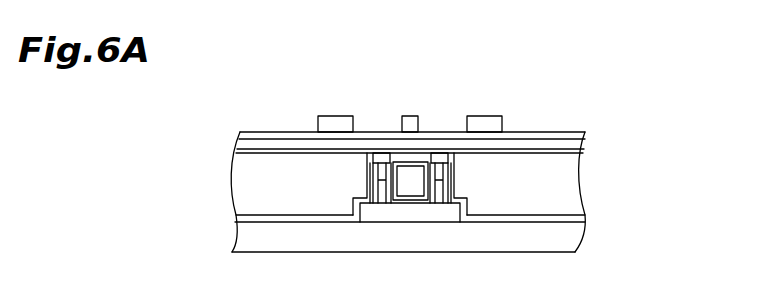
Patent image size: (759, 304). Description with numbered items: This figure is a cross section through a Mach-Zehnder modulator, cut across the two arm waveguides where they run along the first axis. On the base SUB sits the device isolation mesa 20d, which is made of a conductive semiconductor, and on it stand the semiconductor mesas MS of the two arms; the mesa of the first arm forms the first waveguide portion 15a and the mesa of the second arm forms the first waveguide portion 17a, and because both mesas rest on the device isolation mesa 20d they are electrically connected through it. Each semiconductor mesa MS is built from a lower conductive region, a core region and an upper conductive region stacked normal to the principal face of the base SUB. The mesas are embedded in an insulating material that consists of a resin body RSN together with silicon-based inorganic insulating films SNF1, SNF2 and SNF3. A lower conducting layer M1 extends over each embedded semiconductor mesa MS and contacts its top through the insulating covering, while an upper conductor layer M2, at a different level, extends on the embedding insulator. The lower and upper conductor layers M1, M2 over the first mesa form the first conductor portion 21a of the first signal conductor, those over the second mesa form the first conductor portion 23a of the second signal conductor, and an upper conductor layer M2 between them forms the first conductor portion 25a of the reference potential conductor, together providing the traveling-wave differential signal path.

The first conductor portion 21a is at (336, 100).
The first conductor portion 25a is at (412, 120).
The first conductor portion 23a is at (538, 69).
The lower conducting layer M1 is at (381, 160).
The upper conductor layer M2 is at (330, 120).
The resin body RSN is at (550, 165).
The semiconductor mesa MS is at (453, 170).
The first waveguide portion 17a is at (453, 185).
The first waveguide portion 15a is at (368, 188).
The device isolation mesa 20d is at (440, 212).
The silicon-based inorganic insulating film SNF1 is at (255, 216).
The silicon-based inorganic insulating film SNF2 is at (368, 163).
The silicon-based inorganic insulating film SNF3 is at (250, 144).
The base SUB is at (315, 249).